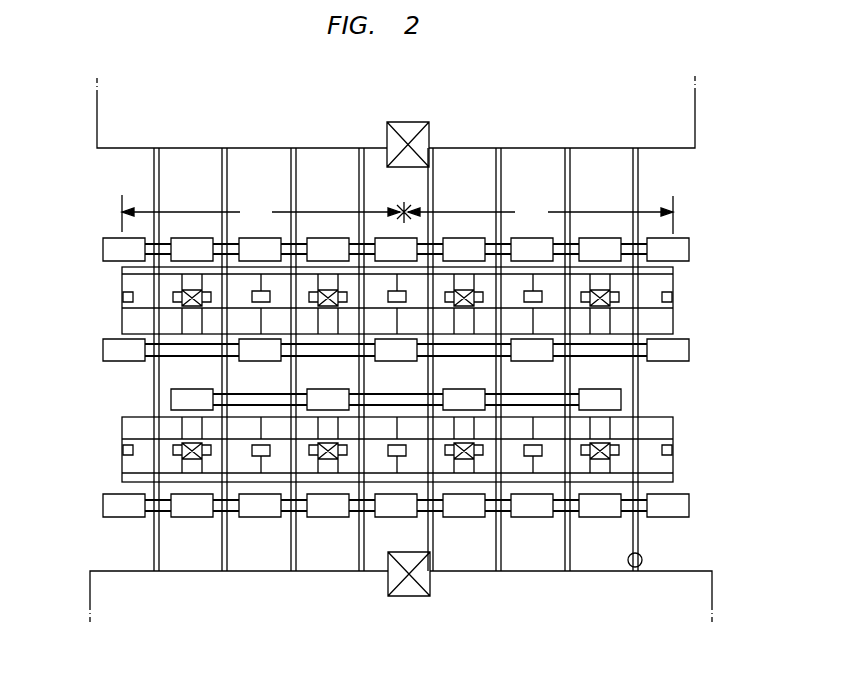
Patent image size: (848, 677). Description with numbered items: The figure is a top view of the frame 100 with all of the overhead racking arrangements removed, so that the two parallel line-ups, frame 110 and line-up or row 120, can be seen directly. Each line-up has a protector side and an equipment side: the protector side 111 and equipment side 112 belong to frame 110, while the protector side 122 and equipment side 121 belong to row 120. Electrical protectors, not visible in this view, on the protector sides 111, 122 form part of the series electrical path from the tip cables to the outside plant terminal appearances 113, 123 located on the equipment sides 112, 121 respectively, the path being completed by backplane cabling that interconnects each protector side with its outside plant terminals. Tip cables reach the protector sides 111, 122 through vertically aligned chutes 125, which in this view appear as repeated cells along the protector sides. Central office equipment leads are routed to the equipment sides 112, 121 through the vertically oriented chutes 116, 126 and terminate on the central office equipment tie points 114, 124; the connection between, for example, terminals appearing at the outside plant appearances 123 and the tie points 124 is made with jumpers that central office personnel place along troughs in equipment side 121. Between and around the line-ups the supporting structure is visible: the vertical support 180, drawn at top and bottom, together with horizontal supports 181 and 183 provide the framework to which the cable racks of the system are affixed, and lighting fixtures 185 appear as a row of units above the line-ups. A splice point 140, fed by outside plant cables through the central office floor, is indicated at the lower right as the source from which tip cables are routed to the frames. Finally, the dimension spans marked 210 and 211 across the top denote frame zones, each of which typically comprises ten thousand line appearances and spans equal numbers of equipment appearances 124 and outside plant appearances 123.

The frame 100 is at (764, 227).
The frame 110 is at (757, 464).
The protector side 111 is at (673, 478).
The equipment side 112 is at (673, 428).
The outside plant terminal appearances 113 is at (245, 433).
The central office equipment tie points 114 is at (122, 428).
The vertically oriented chutes 116 is at (173, 451).
The line-up or row 120 is at (754, 306).
The equipment side 121 is at (673, 323).
The protector side 122 is at (673, 272).
The outside plant terminal appearances 123 is at (244, 312).
The central office equipment tie points 124 is at (122, 322).
The vertically aligned chutes 125 is at (196, 290).
The vertically oriented chutes 126 is at (173, 294).
The splice points 140 is at (643, 566).
The vertical support 180 is at (410, 122).
The horizontal support 181 is at (523, 571).
The horizontal support 183 is at (572, 372).
The lighting fixtures 185 is at (103, 350).
The frame zone 210 is at (540, 215).
The frame zone 211 is at (266, 213).